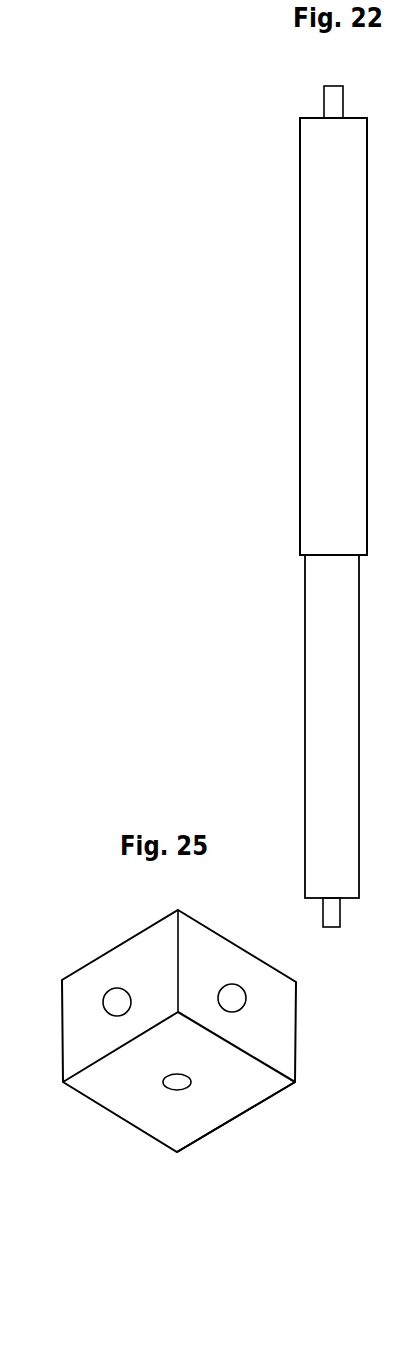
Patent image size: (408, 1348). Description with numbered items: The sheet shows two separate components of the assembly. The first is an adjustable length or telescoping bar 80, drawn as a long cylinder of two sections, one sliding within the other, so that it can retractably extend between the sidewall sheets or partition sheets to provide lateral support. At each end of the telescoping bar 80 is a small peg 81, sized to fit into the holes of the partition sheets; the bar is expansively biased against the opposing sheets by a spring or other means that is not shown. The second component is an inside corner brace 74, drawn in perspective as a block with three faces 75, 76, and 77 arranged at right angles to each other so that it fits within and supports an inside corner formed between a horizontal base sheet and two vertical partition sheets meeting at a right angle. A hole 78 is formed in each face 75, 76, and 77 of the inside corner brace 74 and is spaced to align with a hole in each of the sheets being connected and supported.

In FIG. 25, the inside corner brace 74 is at (173, 923).
In FIG. 25, the face 75 is at (260, 1021).
In FIG. 25, the face 76 is at (235, 1118).
In FIG. 25, the face 77 is at (83, 990).
In FIG. 25, the hole 78 is at (175, 1083).
In FIG. 22, the telescoping bar 80 is at (335, 304).
In FIG. 22, the peg 81 is at (335, 97).